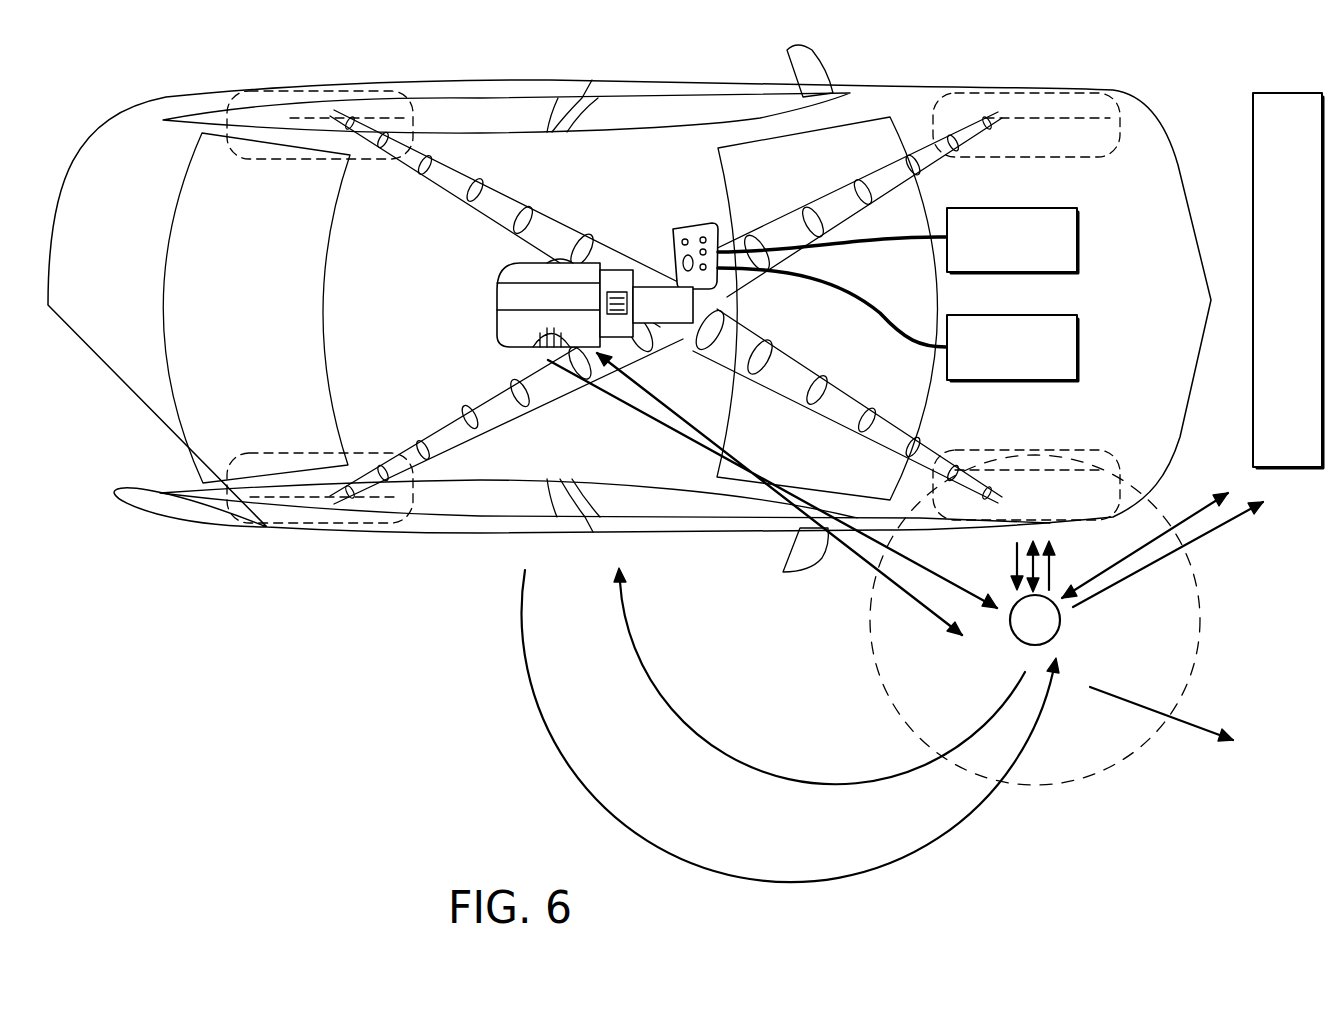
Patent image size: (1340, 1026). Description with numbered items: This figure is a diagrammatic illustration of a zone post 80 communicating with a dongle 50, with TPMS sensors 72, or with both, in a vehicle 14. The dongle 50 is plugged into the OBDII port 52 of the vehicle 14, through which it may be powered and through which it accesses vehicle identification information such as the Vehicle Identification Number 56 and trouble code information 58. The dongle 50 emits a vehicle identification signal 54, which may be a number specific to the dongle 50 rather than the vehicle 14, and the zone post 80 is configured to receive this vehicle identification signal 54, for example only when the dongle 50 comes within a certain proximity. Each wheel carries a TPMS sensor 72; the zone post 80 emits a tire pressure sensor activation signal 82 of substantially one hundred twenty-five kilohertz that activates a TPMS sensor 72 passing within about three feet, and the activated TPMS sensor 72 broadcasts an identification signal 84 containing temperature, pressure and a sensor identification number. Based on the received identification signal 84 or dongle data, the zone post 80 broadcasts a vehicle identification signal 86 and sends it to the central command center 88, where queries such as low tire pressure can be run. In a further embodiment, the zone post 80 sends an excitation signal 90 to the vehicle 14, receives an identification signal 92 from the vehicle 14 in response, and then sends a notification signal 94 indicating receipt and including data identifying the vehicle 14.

The vehicle 14 is at (143, 170).
The dongle 50 is at (496, 303).
The OBDII port 52 is at (688, 229).
The vehicle identification signal 54 is at (932, 612).
The Vehicle Identification Number (VIN) 56 is at (1079, 240).
The trouble code information 58 is at (1079, 348).
The TPMS sensor 72 is at (305, 96).
The zone post 80 is at (1059, 632).
The TPMS tire pressure sensor activation signal 82 is at (1052, 581).
The identification signal 84 is at (1015, 580).
The vehicle identification signal 86 is at (1162, 560).
The central command center 88 is at (1283, 92).
The excitation signal 90 is at (835, 786).
The identification signal 92 is at (928, 845).
The notification signal 94 is at (1168, 722).